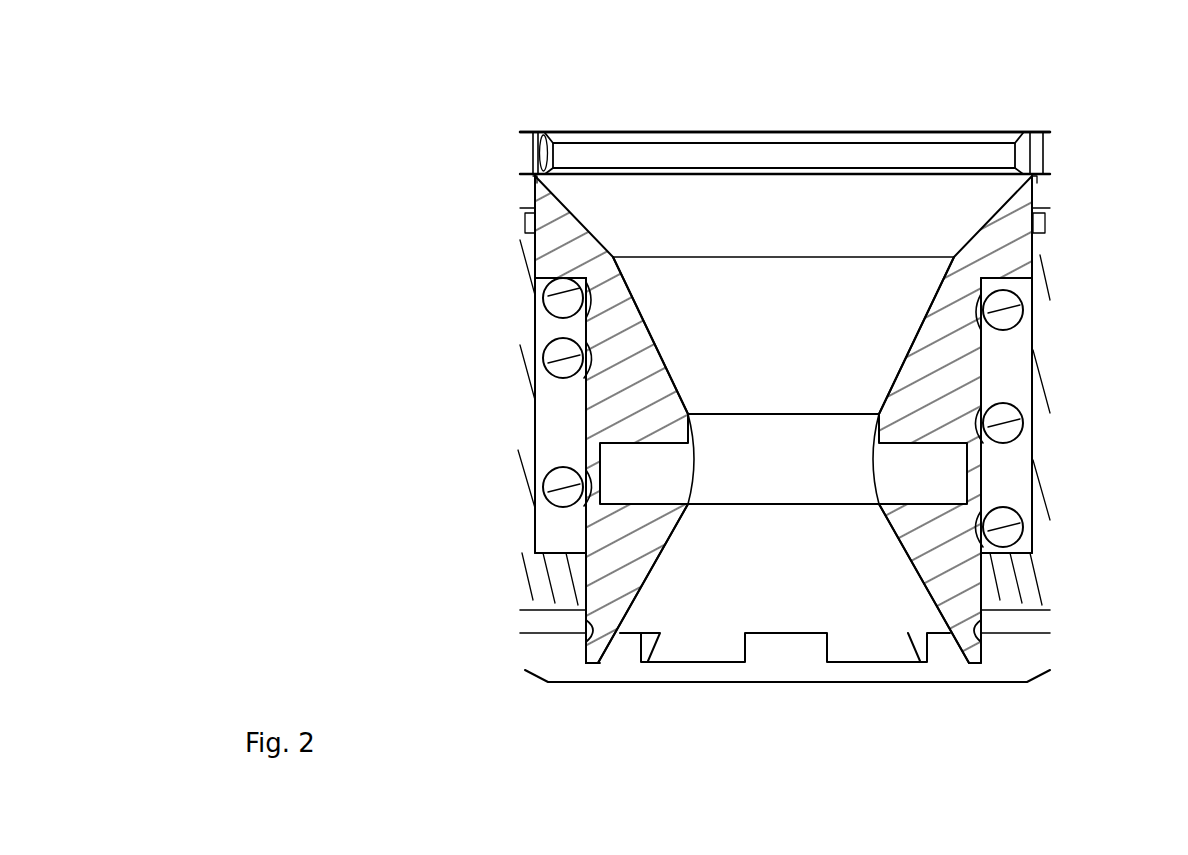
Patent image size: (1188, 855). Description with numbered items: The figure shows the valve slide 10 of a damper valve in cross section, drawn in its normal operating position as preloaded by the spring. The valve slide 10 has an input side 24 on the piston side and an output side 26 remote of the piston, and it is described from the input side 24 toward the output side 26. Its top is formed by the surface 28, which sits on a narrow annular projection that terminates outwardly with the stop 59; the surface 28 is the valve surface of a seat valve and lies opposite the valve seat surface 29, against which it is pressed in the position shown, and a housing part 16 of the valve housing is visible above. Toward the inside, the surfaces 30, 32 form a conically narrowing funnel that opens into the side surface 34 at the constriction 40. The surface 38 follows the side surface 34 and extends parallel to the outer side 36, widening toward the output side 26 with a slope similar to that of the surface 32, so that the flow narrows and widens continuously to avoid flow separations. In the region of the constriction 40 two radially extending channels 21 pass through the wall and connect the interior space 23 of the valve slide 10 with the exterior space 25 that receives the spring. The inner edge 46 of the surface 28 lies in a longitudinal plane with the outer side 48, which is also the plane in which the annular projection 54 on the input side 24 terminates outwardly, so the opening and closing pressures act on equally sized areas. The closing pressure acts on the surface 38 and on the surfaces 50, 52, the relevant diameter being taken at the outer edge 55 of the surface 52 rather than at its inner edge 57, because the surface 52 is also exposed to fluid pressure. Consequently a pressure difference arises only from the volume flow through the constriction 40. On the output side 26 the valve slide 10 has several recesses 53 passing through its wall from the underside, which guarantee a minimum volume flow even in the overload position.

The valve slide 10 is at (358, 118).
The housing part 16 is at (1040, 153).
The channels 21 is at (915, 485).
The interior space 23 is at (818, 335).
The input side 24 is at (778, 113).
The exterior space 25 is at (1010, 380).
The output side 26 is at (718, 721).
The surface 28 is at (535, 140).
The valve seat surface 29 is at (541, 165).
The surface 30 is at (577, 220).
The surface 32 is at (662, 313).
The side surface 34 is at (690, 432).
The outer side 36 is at (598, 413).
The surface 38 is at (645, 590).
The constriction 40 is at (789, 475).
The inner edge 46 is at (553, 140).
The outer side 48 is at (535, 256).
The surface 50 is at (555, 292).
The surface 52 is at (592, 665).
The recesses 53 is at (920, 648).
The annular projection 54 is at (1000, 262).
The outer edge 55 is at (592, 665).
The inner edge 57 is at (592, 665).
The stop 59 is at (533, 185).